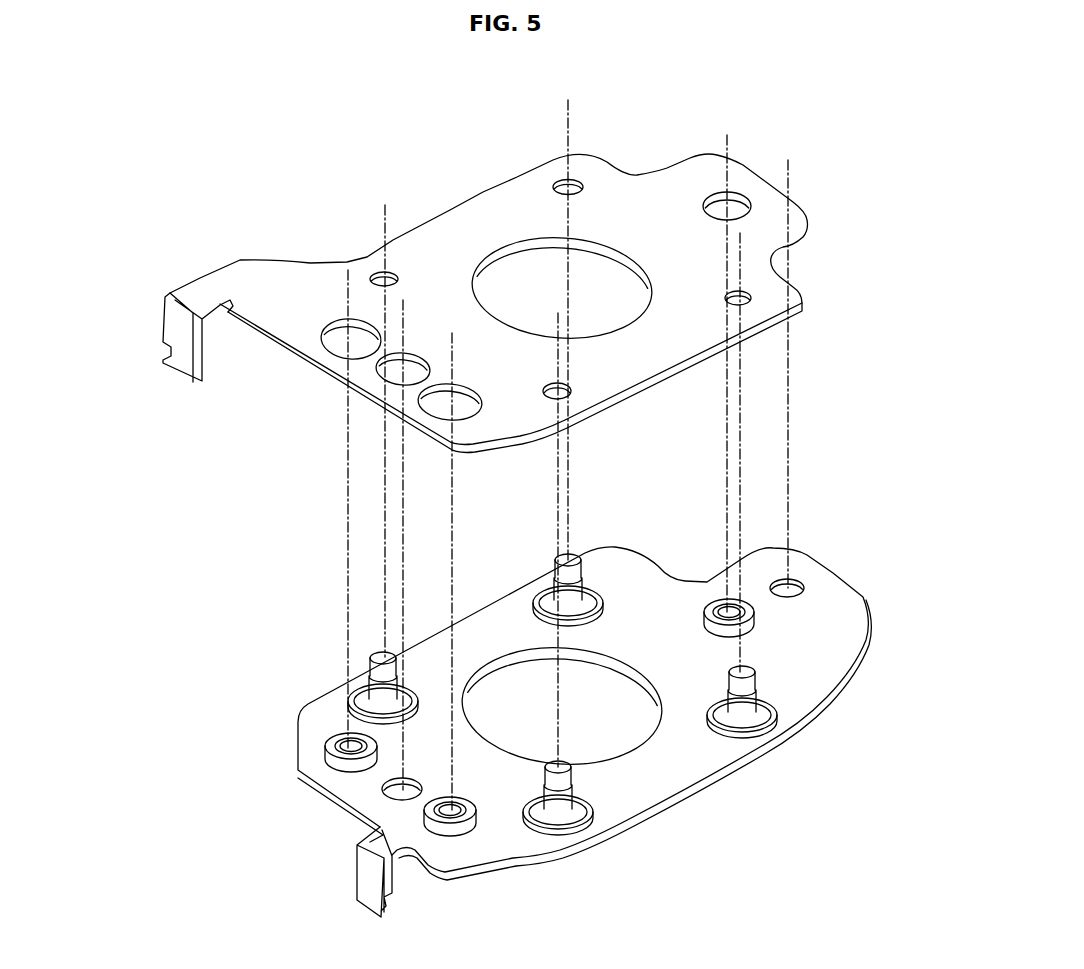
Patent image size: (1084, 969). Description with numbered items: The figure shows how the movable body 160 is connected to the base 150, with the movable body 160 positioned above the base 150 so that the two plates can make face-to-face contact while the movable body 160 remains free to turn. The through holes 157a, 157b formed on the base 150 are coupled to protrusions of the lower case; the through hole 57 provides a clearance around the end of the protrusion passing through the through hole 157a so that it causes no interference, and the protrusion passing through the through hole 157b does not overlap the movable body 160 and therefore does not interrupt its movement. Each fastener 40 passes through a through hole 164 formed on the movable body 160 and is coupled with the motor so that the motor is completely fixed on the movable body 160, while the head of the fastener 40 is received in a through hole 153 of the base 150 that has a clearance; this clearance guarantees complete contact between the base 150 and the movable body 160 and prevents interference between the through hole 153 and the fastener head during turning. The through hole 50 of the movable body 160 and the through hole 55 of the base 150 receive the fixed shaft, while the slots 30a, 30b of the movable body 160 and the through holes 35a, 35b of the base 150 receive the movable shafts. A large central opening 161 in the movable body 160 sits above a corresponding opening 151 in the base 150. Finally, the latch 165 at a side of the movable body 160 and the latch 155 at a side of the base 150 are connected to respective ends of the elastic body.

The movable body 160 is at (803, 138).
The latch 165 is at (182, 363).
The through hole 164 is at (558, 186).
The through hole 50 is at (713, 198).
The central opening of upper plate 161 is at (508, 262).
The slot 30a is at (333, 343).
The through hole 57 is at (397, 371).
The slot 30b is at (435, 414).
The base 150 is at (855, 562).
The latch 155 is at (368, 883).
The central opening of lower plate 151 is at (645, 737).
The through hole 157a is at (387, 801).
The through hole 157b is at (803, 590).
The through hole 55 is at (712, 599).
The through hole 35a is at (326, 763).
The through hole 35b is at (450, 834).
The fastener 40 is at (560, 593).
The through hole 153 is at (594, 601).